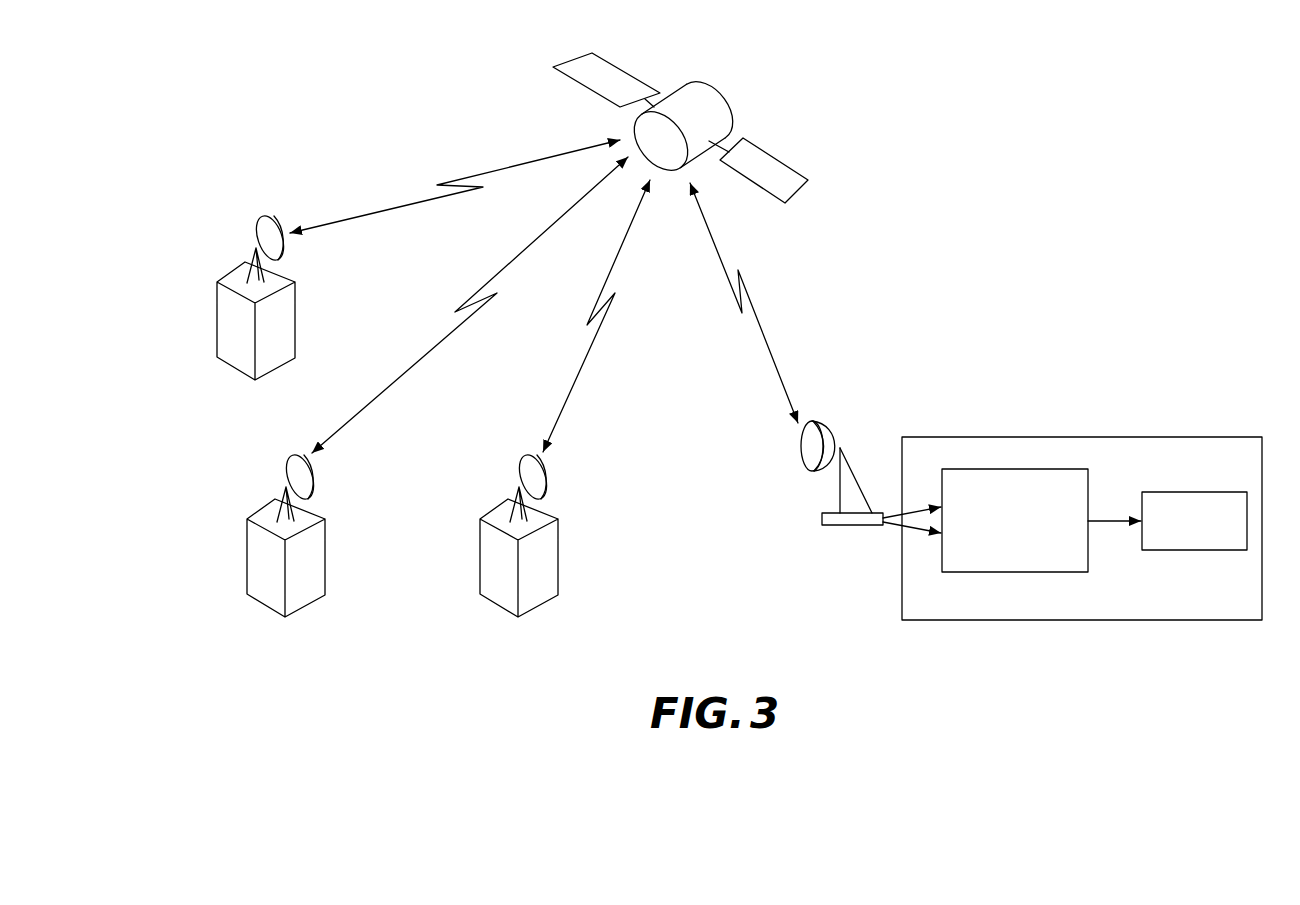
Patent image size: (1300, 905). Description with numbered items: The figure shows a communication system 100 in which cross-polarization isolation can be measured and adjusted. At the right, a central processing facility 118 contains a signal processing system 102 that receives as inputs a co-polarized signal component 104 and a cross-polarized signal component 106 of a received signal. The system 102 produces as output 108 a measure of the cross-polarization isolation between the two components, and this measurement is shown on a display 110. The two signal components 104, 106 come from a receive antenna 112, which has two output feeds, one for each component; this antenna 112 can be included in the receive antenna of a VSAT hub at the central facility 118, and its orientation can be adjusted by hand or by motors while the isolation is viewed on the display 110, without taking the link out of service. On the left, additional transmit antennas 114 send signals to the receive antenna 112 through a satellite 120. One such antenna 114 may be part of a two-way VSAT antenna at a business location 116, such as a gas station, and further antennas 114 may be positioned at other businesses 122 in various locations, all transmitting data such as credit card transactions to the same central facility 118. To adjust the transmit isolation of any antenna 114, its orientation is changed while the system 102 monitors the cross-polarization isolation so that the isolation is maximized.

The communication system 100 is at (1013, 180).
The signal processing system 102 is at (1032, 468).
The co-polarized signal component 104 is at (918, 509).
The cross-polarized signal component 106 is at (920, 532).
The output 108 is at (1112, 523).
The display 110 is at (1192, 492).
The receive antenna 112 is at (840, 530).
The transmit antenna 114 is at (268, 213).
The business location 116 is at (320, 558).
The central processing facility 118 is at (1222, 437).
The satellite 120 is at (727, 90).
The businesses 122 is at (295, 305).